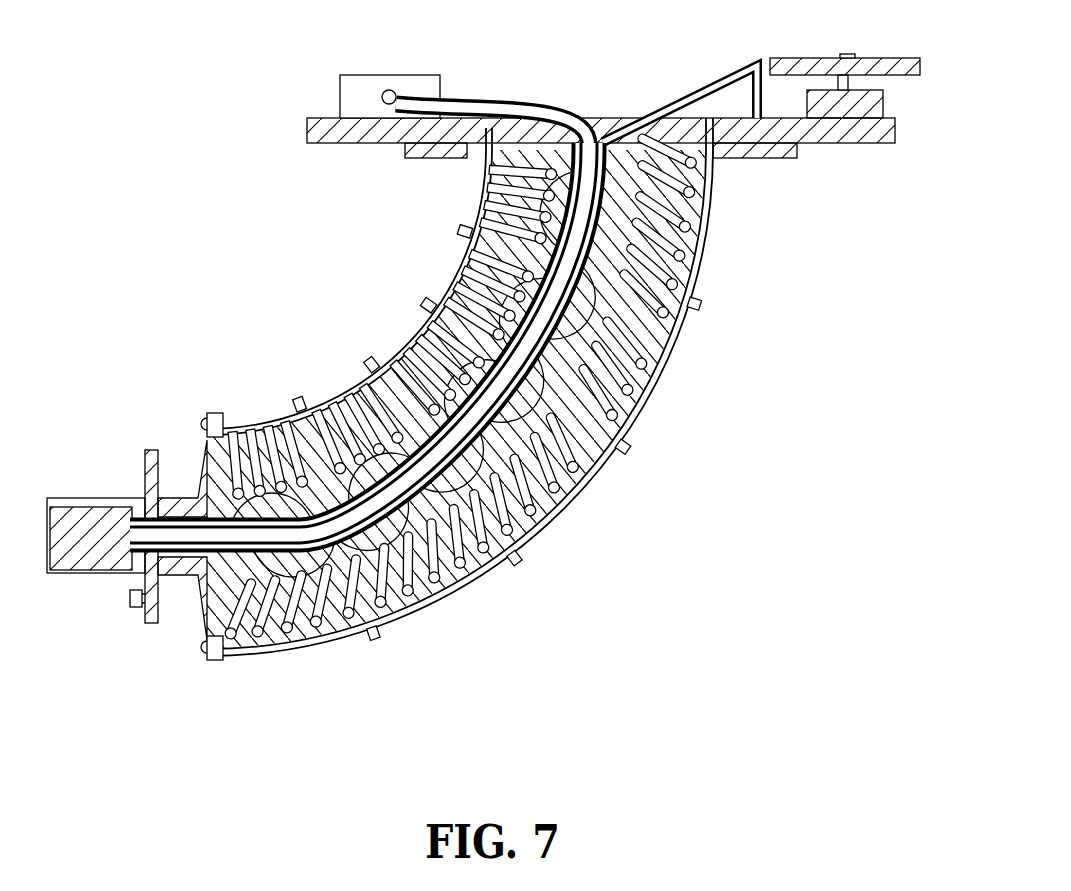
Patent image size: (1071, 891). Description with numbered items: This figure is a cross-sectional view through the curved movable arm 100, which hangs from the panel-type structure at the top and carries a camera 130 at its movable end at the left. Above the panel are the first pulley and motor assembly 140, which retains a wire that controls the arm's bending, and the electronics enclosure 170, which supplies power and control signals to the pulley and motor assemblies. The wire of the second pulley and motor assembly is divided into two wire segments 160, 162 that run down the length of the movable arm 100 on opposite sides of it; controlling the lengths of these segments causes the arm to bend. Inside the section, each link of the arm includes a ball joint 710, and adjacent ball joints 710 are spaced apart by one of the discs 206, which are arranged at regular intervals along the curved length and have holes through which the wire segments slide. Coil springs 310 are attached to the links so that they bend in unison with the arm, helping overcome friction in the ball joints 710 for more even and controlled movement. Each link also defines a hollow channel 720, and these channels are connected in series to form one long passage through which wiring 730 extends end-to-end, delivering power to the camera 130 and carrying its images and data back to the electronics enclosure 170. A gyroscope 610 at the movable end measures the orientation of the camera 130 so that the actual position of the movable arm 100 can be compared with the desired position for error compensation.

The movable arm 100 is at (503, 365).
The camera 130 is at (75, 522).
The first pulley and motor assembly 140 is at (872, 104).
The wire segment 160 is at (505, 387).
The wire segment 162 is at (349, 281).
The electronics enclosure 170 is at (378, 74).
The disc 206 is at (451, 442).
The coil spring 310 is at (680, 258).
The gyroscope 610 is at (128, 600).
The ball joint 710 is at (473, 305).
The hollow channel 720 is at (353, 363).
The wiring 730 is at (506, 101).